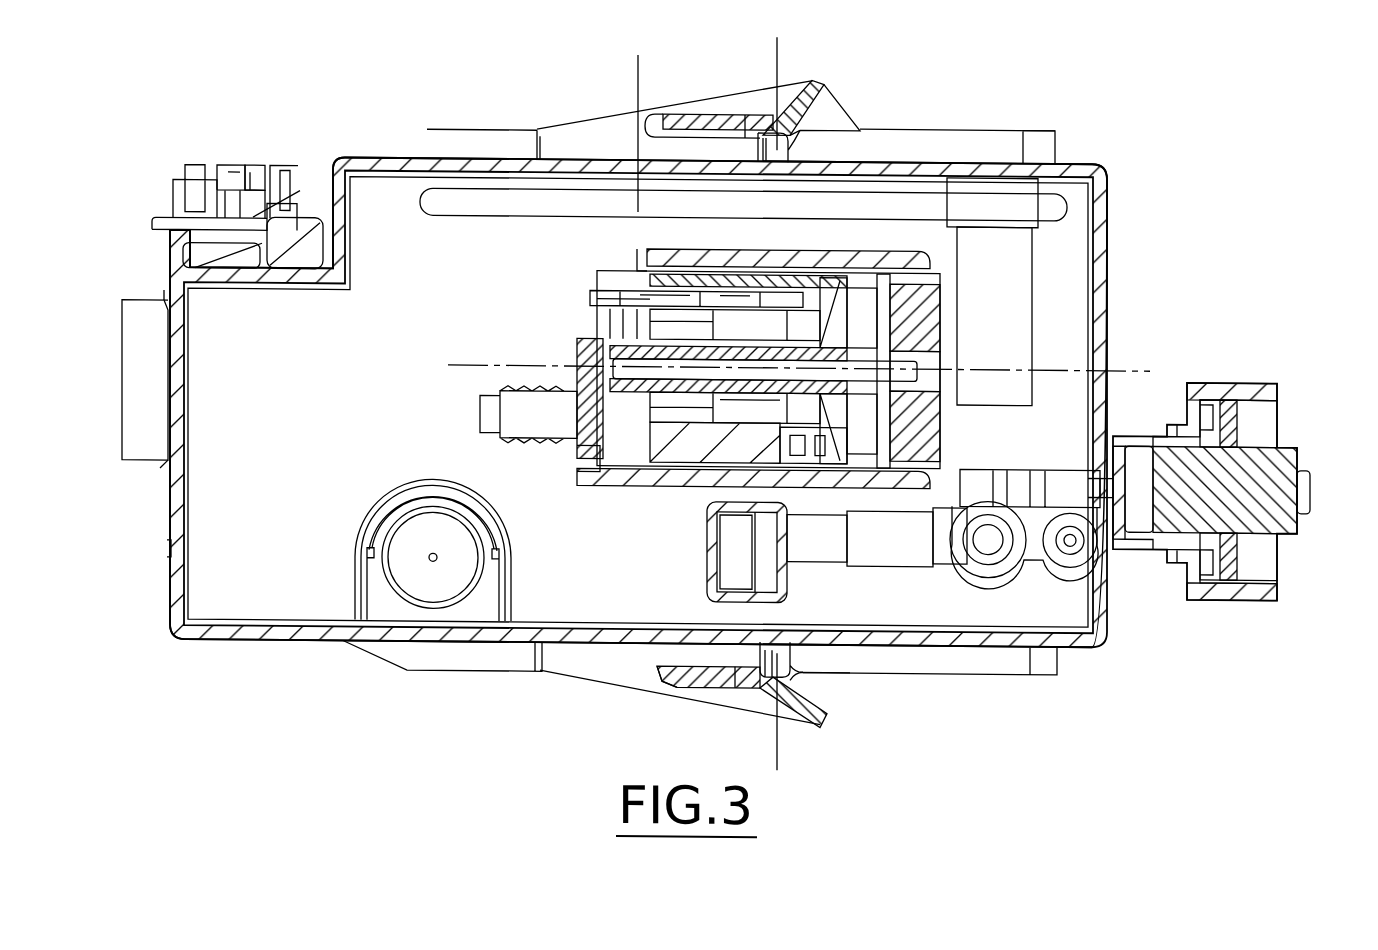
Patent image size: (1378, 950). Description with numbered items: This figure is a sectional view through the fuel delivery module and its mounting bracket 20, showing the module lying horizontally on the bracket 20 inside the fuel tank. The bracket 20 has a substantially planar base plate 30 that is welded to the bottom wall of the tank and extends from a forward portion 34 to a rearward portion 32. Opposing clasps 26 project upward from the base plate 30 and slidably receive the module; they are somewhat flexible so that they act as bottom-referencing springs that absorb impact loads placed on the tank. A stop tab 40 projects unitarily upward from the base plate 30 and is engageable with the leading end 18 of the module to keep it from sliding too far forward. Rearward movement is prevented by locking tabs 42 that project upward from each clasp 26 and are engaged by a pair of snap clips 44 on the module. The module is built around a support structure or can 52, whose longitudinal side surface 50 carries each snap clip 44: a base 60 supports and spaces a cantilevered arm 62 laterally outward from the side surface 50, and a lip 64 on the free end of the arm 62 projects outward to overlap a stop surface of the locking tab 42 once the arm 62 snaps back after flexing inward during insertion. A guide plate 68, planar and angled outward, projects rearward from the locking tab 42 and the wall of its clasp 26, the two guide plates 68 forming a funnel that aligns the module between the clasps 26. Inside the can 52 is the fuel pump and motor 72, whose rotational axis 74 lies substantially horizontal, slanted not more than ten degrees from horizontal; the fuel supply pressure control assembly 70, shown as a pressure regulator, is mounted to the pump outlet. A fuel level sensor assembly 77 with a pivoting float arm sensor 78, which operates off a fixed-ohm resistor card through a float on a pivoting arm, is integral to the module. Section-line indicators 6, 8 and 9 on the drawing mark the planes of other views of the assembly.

The leading end 18 is at (188, 582).
The bracket 20 is at (440, 126).
The clasps 26 is at (595, 134).
The base plate 30 is at (438, 672).
The rearward portion 32 is at (1003, 137).
The forward portion 34 is at (162, 466).
The stop tab 40 is at (145, 388).
The locking tabs 42 is at (707, 115).
The snap clips 44 is at (803, 131).
The side surface 50 is at (950, 162).
The can 52 is at (1110, 212).
The base 60 is at (800, 147).
The cantilevered arm 62 is at (745, 127).
The lip 64 is at (658, 116).
The guide plate 68 is at (803, 98).
The fuel supply pressure control assembly 70 is at (1278, 418).
The fuel pump and motor 72 is at (935, 312).
The rotational axis 74 is at (1127, 377).
The fuel level sensor assembly 77 is at (237, 165).
The pivoting float arm sensor 78 is at (228, 165).
The section line 6 is at (632, 70).
The section line 8 is at (162, 538).
The section line 9 is at (784, 43).